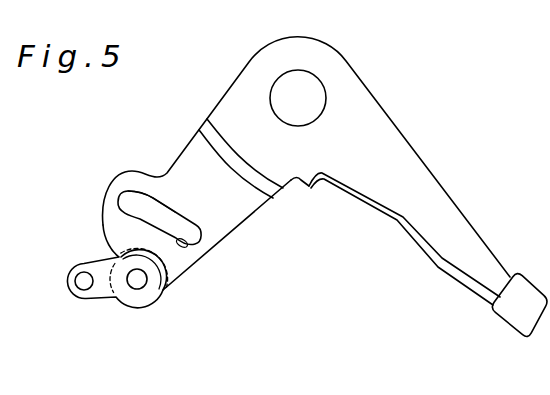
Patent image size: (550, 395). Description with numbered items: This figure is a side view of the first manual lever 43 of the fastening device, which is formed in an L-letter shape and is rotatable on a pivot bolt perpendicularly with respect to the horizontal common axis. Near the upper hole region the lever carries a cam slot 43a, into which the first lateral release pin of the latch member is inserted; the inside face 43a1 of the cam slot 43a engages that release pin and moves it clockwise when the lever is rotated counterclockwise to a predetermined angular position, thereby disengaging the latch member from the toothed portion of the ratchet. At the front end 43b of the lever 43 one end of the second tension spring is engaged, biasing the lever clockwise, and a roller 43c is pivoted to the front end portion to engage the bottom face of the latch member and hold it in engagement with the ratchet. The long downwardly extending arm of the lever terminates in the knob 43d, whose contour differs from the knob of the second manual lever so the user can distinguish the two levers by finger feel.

The first manual lever 43 is at (364, 85).
The cam slot 43a is at (186, 248).
The inside face of cam slot 43a1 is at (143, 194).
The front end of lever 43b is at (73, 261).
The roller 43c is at (111, 282).
The knob 43d is at (512, 317).